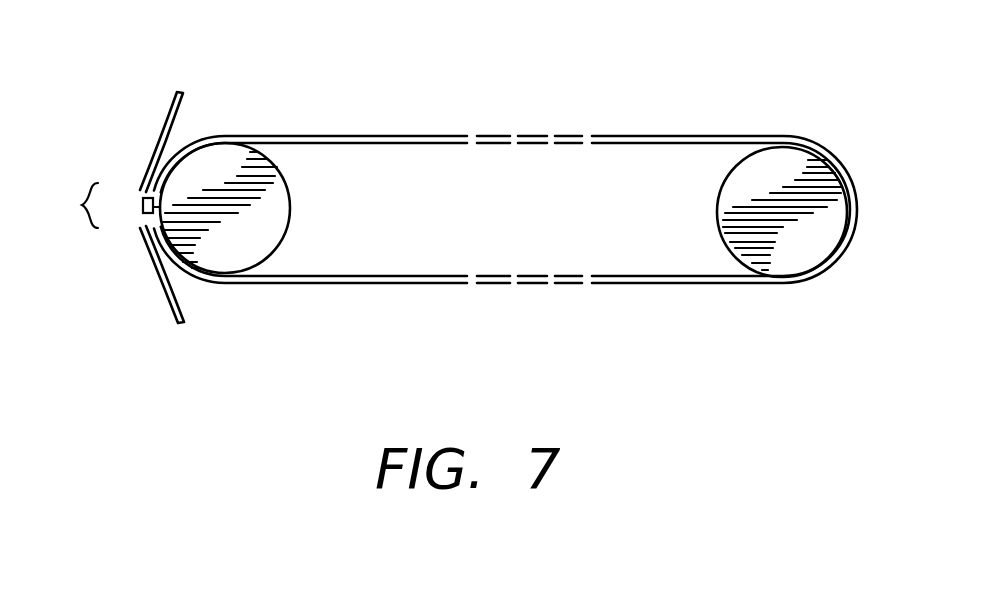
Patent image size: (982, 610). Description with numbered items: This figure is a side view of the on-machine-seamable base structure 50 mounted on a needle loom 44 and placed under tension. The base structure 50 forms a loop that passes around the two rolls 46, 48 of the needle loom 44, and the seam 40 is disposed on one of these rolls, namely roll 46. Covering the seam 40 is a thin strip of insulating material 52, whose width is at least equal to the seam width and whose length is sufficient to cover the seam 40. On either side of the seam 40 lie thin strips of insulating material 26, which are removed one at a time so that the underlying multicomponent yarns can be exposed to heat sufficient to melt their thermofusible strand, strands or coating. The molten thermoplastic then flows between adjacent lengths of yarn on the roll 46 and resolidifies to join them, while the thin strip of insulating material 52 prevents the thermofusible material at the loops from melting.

The thin strips of insulating material 26 is at (172, 110).
The seam 40 is at (65, 205).
The needle loom 44 is at (407, 72).
The roll 46 is at (235, 253).
The roll 48 is at (780, 262).
The on-machine-seamable base structure 50 is at (642, 134).
The thin strip of insulating material 52 is at (145, 205).